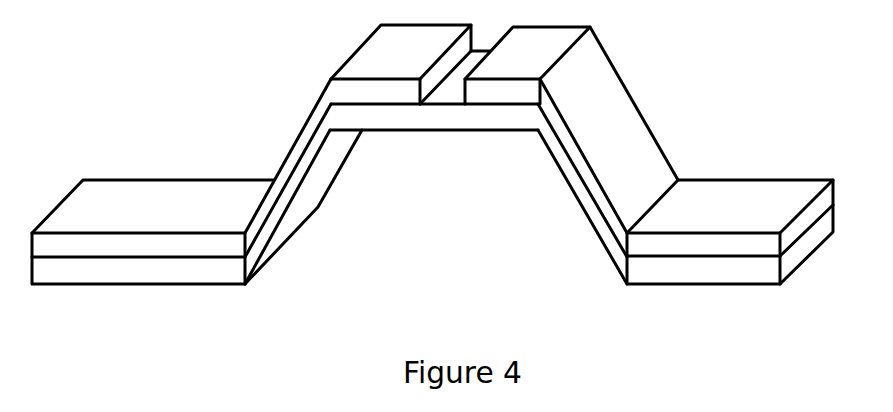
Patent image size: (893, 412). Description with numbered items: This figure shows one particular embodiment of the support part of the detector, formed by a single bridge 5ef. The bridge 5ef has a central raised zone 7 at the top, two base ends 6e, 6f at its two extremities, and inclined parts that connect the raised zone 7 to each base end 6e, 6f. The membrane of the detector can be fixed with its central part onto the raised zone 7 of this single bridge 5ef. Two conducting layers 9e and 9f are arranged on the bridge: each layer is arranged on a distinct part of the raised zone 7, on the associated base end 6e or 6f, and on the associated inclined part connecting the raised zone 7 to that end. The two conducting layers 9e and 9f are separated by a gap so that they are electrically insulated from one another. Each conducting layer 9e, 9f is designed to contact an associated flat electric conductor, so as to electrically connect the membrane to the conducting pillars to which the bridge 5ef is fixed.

The base end 6e is at (152, 217).
The base end 6f is at (737, 193).
The conducting layer 9e is at (309, 118).
The conducting layer 9f is at (597, 75).
The raised zone 7 is at (327, 47).
The bridge 5ef is at (445, 200).